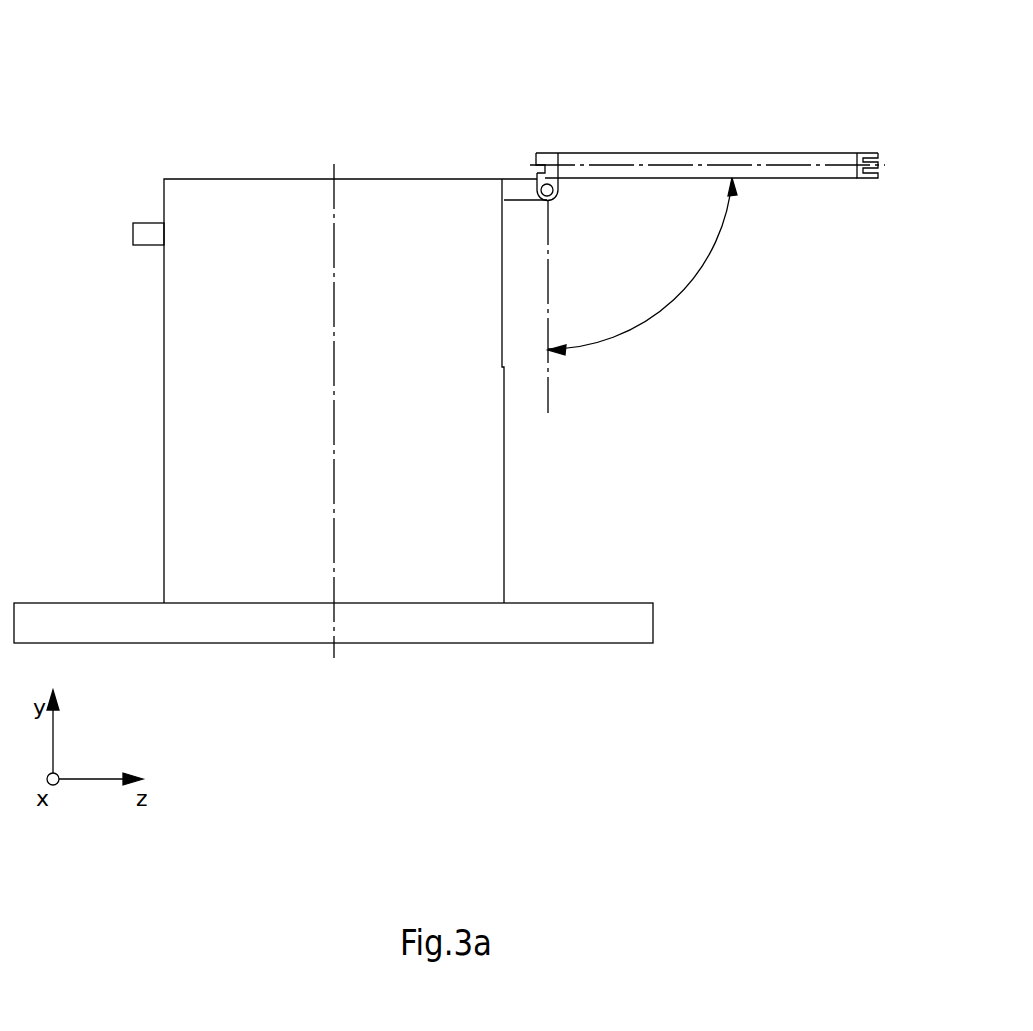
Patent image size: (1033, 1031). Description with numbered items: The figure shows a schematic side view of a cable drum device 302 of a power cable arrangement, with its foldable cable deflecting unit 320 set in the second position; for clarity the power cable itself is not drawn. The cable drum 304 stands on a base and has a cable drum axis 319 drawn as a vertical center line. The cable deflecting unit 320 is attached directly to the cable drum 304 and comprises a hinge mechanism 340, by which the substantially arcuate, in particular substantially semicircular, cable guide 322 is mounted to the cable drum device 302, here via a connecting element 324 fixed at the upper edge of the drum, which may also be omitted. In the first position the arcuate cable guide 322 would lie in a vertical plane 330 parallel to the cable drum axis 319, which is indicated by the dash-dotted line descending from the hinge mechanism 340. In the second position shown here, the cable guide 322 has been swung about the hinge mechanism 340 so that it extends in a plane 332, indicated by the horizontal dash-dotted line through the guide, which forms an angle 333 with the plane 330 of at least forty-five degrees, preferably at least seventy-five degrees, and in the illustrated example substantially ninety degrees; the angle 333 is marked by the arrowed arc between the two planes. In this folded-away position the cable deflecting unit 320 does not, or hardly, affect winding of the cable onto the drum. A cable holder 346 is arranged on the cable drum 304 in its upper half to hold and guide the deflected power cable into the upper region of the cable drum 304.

The cable drum device 302 is at (184, 118).
The cable drum 304 is at (285, 203).
The cable drum axis 319 is at (334, 322).
The cable deflecting unit 320 is at (707, 99).
The arcuate cable guide 322 is at (718, 160).
The connecting element 324 is at (518, 188).
The plane 330 is at (548, 395).
The plane 332 is at (770, 165).
The angle 333 is at (699, 272).
The hinge mechanism 340 is at (555, 195).
The cable holder 346 is at (145, 235).